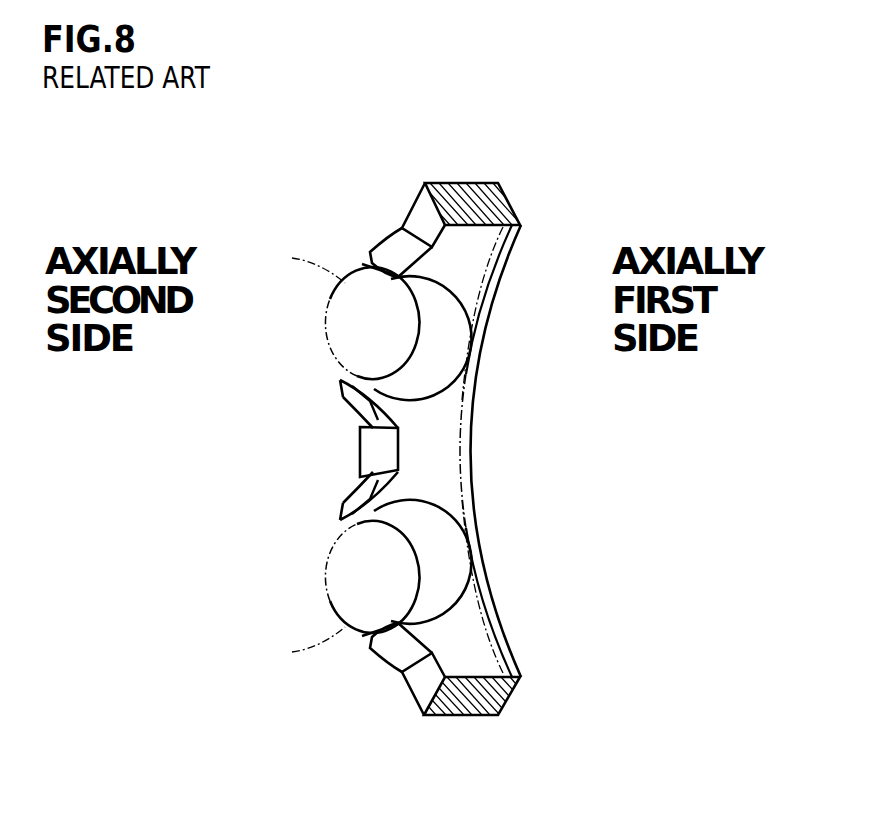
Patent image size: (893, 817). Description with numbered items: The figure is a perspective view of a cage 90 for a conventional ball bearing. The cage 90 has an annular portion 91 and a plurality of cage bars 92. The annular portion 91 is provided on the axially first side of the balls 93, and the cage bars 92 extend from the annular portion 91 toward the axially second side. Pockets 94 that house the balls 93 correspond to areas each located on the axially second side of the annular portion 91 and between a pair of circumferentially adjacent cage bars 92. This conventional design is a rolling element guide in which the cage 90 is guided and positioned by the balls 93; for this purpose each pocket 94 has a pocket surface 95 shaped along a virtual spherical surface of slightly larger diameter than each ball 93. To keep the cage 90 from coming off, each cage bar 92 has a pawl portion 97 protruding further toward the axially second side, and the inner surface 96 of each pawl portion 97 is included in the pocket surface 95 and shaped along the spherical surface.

The cage 90 is at (413, 195).
The annular portion 91 is at (480, 537).
The cage bars 92 is at (455, 237).
The balls 93 is at (301, 450).
The pockets 94 is at (367, 313).
The pocket surface 95 is at (427, 350).
The inner surface 96 is at (370, 262).
The pawl portion 97 is at (387, 247).